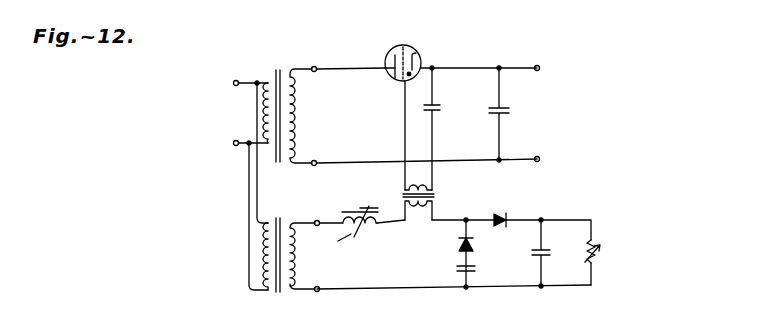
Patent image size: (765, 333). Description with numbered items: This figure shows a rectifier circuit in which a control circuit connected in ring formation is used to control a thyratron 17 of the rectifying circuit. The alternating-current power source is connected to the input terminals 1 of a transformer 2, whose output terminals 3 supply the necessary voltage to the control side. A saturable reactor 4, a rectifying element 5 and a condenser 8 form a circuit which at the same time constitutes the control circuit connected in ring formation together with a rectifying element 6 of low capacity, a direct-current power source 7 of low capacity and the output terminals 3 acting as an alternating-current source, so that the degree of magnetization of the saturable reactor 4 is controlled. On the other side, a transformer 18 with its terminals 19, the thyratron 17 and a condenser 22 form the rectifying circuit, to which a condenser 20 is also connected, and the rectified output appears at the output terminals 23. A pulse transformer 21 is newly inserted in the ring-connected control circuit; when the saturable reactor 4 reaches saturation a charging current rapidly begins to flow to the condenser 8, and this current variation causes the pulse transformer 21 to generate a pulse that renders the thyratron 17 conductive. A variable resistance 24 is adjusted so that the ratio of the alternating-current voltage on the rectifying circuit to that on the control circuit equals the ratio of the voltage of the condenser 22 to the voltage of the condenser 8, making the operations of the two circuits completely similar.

The input terminals 1 is at (233, 83).
The transformer 2 is at (278, 217).
The output terminals 3 is at (318, 217).
The saturable reactor 4 is at (352, 234).
The rectifying element 5 is at (500, 213).
The rectifying element of low capacity 6 is at (477, 246).
The direct-current power source of low capacity 7 is at (480, 269).
The condenser 8 is at (547, 250).
The thyratron 17 is at (415, 50).
The transformer 18 is at (278, 66).
The secondary terminals 19 is at (318, 66).
The capacitor 20 is at (443, 112).
The pulse transformer 21 is at (438, 193).
The condenser 22 is at (512, 112).
The output terminals 23 is at (540, 68).
The variable resistance 24 is at (597, 259).